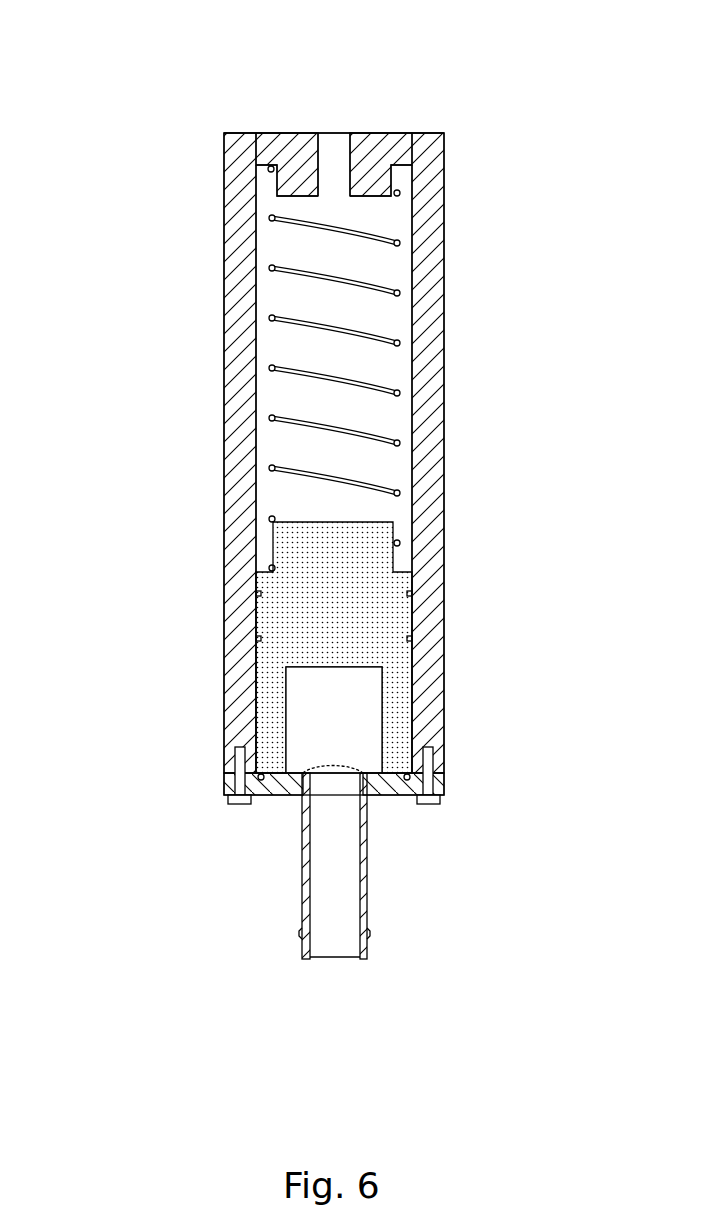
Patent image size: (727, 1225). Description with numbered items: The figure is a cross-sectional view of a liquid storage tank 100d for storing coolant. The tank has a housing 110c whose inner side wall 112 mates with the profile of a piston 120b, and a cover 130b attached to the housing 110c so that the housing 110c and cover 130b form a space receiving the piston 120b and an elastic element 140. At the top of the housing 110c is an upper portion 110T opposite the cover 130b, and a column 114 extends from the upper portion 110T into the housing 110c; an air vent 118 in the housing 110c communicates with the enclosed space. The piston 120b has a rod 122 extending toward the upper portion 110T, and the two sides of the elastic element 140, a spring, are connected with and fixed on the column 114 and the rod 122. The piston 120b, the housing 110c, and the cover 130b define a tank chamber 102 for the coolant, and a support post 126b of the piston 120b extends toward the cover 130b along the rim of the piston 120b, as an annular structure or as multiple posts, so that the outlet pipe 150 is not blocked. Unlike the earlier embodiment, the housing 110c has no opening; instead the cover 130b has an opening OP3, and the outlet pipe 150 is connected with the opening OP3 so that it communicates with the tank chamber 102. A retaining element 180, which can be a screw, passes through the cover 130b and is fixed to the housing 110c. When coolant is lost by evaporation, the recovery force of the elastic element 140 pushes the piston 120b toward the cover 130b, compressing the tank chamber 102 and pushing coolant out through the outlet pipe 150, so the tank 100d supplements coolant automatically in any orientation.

The liquid storage tank 100d is at (102, 31).
The housing 110c is at (236, 352).
The upper portion 110T is at (395, 131).
The inner side wall 112 is at (418, 440).
The column 114 is at (378, 178).
The air vent 118 is at (332, 145).
The elastic element 140 is at (378, 237).
The rod 122 is at (350, 527).
The piston 120b is at (272, 607).
The support post 126b is at (395, 710).
The tank chamber 102 is at (308, 702).
The cover 130b is at (280, 788).
The retaining element 180 is at (428, 800).
The outlet pipe 150 is at (303, 870).
The opening OP3 is at (336, 784).